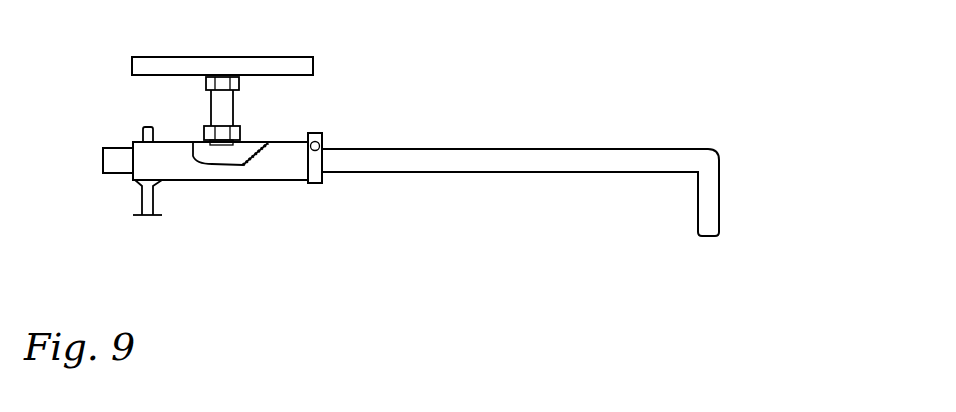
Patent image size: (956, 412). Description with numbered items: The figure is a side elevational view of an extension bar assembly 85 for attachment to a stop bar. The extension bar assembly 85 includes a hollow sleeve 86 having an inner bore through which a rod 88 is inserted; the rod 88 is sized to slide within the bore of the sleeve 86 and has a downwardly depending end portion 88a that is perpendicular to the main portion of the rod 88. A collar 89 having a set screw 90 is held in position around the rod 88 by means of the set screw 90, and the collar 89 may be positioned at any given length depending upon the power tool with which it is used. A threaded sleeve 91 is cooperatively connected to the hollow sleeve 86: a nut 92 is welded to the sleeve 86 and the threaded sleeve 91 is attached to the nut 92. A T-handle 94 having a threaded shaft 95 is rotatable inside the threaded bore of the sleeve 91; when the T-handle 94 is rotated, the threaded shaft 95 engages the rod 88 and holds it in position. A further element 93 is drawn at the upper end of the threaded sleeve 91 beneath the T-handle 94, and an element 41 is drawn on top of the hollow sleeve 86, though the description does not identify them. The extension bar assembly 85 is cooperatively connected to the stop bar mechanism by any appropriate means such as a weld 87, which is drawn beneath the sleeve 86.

The extension bar assembly 85 is at (470, 72).
The T-handle 94 is at (250, 57).
The upper nut 93 is at (203, 85).
The threaded sleeve 91 is at (231, 113).
The nut 92 is at (241, 132).
The hollow sleeve 86 is at (273, 183).
The threaded shaft 95 is at (225, 145).
The post 41 is at (140, 203).
The weld 87 is at (155, 182).
The collar 89 is at (320, 185).
The set screw 90 is at (320, 132).
The rod 88 is at (485, 157).
The downwardly depending end portion 88a is at (717, 180).